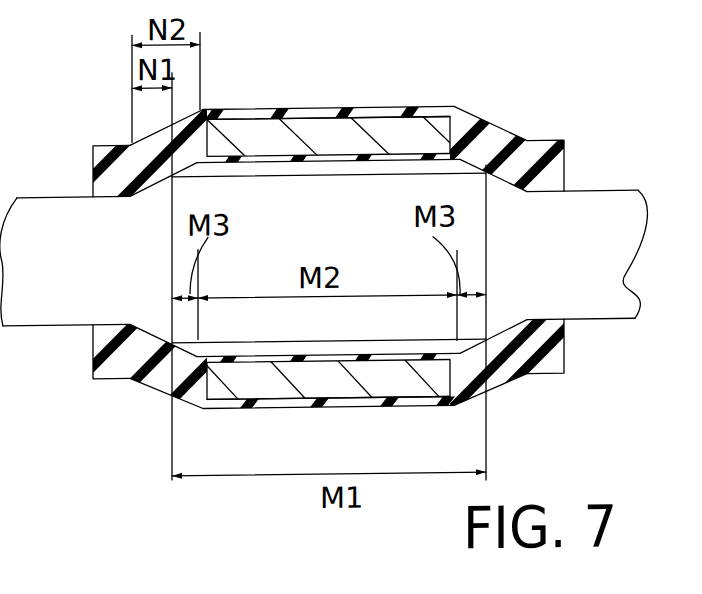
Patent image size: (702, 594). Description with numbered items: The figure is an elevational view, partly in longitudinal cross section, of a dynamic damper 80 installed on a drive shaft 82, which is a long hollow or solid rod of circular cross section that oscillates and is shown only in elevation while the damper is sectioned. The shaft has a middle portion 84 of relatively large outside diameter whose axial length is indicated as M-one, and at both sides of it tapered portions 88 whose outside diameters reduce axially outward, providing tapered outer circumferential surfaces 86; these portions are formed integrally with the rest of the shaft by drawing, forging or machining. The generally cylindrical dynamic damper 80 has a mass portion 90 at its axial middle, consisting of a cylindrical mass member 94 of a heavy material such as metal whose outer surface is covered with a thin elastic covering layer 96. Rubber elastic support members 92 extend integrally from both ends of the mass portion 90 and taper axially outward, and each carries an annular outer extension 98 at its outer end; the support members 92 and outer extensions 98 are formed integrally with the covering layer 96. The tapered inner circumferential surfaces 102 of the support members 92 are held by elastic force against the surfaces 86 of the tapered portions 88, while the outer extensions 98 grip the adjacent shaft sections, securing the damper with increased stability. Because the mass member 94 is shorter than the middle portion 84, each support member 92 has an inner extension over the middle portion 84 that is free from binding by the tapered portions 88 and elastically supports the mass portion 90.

The dynamic damper 80 is at (337, 238).
The drive shaft 82 is at (637, 168).
The middle portion 84 is at (325, 201).
The tapered outer circumferential surfaces 86 is at (128, 347).
The tapered portions 88 is at (152, 212).
The mass portion 90 is at (274, 89).
The elastic support members 92 is at (163, 382).
The mass member 94 is at (403, 385).
The elastic covering layer 96 is at (283, 405).
The outer extension 98 is at (102, 373).
The inner circumferential surfaces 102 is at (472, 192).